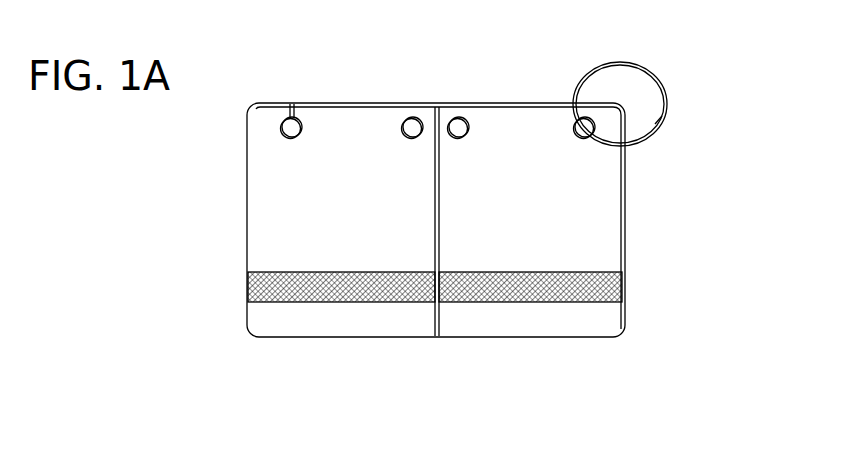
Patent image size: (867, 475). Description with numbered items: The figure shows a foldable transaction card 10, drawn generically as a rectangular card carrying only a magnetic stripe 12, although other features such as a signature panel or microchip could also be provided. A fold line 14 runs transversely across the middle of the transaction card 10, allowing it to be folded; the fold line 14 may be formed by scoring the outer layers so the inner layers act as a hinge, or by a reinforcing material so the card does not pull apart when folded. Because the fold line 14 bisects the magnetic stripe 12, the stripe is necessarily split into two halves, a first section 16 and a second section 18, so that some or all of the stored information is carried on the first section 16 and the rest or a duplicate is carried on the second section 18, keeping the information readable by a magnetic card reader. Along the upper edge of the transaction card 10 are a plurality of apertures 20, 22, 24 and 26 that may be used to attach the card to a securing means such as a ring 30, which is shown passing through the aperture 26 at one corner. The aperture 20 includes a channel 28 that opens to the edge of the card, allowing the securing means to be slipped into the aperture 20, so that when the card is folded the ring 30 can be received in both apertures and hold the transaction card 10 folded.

The foldable transaction card 10 is at (439, 58).
The magnetic stripe 12 is at (248, 288).
The fold line 14 is at (437, 322).
The first section of the magnetic stripe 16 is at (342, 303).
The second section of the magnetic stripe 18 is at (500, 303).
The aperture 20 is at (285, 127).
The aperture 22 is at (413, 117).
The aperture 24 is at (459, 117).
The aperture 26 is at (583, 118).
The channel 28 is at (292, 112).
The ring 30 is at (660, 73).